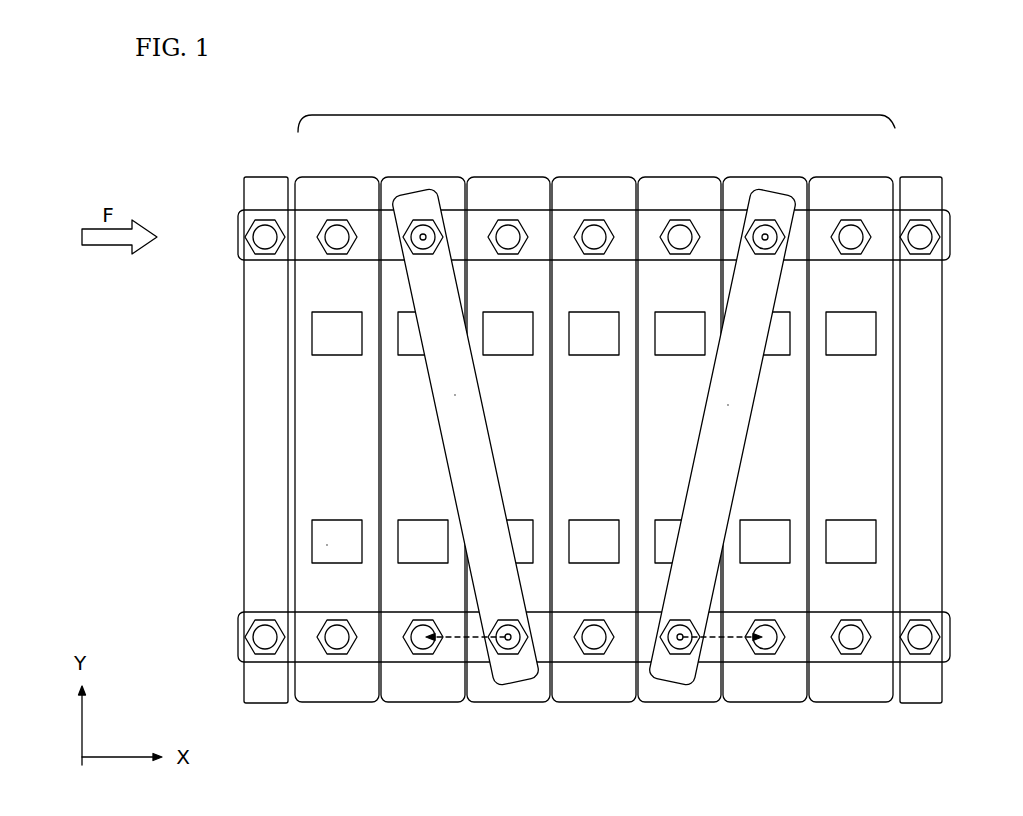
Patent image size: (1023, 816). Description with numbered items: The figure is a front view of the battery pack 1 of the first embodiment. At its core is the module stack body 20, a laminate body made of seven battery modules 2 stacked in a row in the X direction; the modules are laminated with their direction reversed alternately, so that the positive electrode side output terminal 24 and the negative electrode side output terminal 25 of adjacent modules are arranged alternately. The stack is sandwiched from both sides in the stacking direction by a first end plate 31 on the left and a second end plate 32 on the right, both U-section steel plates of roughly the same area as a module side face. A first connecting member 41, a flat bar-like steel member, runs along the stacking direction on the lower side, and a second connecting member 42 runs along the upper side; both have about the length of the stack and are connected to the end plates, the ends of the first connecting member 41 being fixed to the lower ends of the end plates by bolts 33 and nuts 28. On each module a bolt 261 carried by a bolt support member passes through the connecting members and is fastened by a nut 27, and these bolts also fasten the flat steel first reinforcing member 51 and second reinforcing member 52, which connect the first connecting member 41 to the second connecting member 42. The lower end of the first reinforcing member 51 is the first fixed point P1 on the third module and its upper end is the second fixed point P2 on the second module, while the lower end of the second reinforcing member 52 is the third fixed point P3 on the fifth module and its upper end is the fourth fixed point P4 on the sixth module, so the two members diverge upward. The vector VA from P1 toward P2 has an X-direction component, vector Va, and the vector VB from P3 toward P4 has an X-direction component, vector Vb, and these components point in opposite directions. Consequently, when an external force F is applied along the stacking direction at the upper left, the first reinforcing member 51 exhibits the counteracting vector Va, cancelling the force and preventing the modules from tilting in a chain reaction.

The battery pack 1 is at (954, 140).
The module stack body 20 is at (596, 108).
The battery module 2 is at (337, 177).
The positive electrode side output terminal 24 is at (325, 338).
The negative electrode side output terminal 25 is at (410, 342).
The nut 27 is at (858, 245).
The bolt 261 is at (855, 243).
The nut 28 is at (247, 222).
The bolt 33 is at (247, 245).
The first end plate 31 is at (268, 177).
The second end plate 32 is at (920, 177).
The first connecting member 41 is at (800, 650).
The second connecting member 42 is at (892, 222).
The first reinforcing member 51 is at (512, 675).
The second reinforcing member 52 is at (690, 675).
The vector VA is at (455, 395).
The vector VB is at (728, 405).
The vector Va is at (455, 665).
The vector Vb is at (735, 650).
The first fixed point P1 is at (505, 645).
The second fixed point P2 is at (420, 230).
The third fixed point P3 is at (680, 645).
The fourth fixed point P4 is at (768, 230).